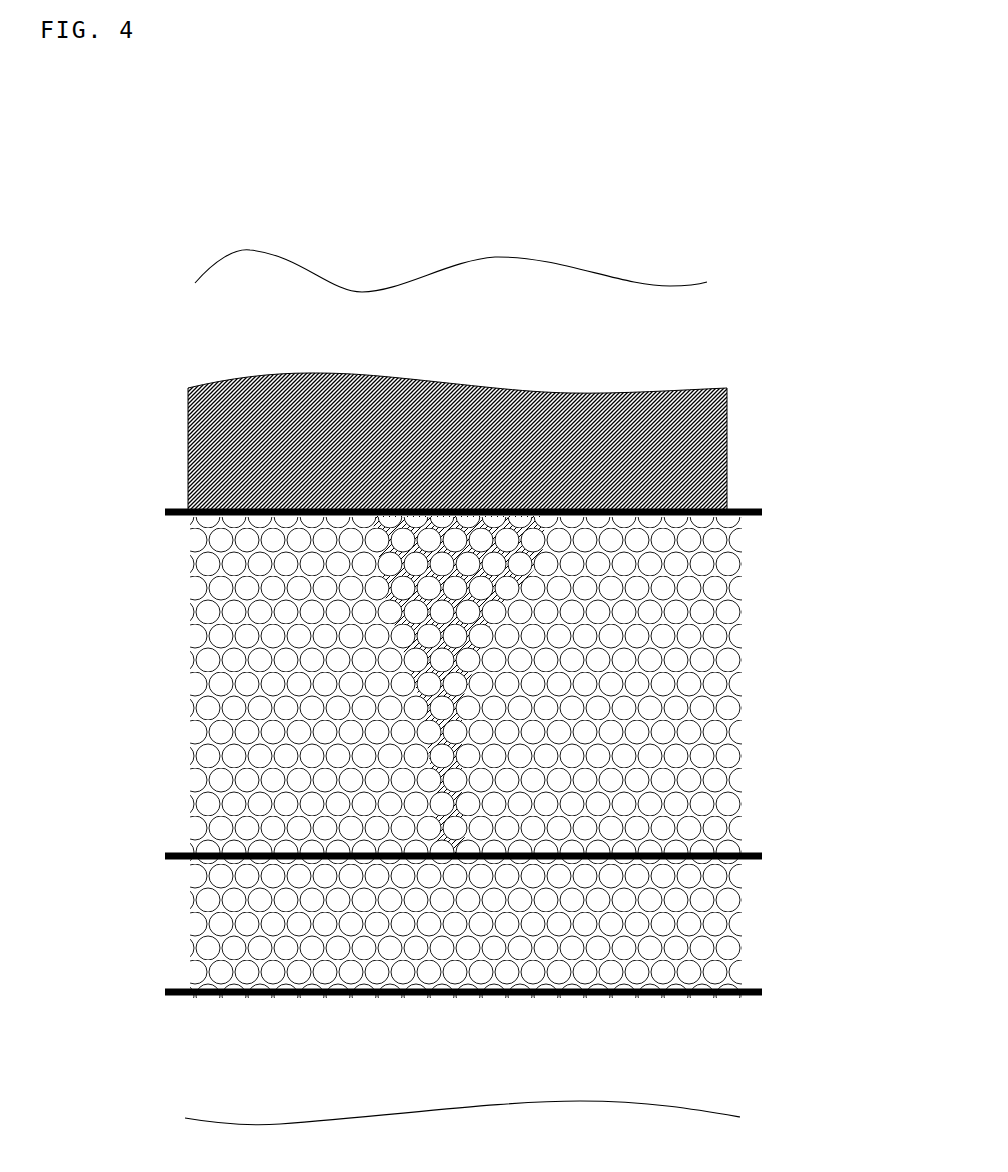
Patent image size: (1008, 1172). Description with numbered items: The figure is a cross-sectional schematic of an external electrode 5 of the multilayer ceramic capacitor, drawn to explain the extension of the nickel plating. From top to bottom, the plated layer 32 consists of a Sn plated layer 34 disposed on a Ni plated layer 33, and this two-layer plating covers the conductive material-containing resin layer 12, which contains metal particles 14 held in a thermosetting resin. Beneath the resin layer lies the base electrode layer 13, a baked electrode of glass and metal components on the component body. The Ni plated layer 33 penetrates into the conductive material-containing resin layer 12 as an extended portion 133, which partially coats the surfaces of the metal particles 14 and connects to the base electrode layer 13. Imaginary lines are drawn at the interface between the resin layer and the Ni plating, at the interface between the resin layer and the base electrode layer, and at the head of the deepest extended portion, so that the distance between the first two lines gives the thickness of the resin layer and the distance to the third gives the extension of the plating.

The external electrode 5 is at (533, 195).
The conductive material-containing resin layer 12 is at (440, 756).
The base electrode layer 13 is at (768, 1013).
The metal particles 14 is at (225, 655).
The plated layer 32 is at (815, 323).
The Ni plated layer 33 is at (737, 392).
The Sn plated layer 34 is at (737, 282).
The extended portion 133 is at (435, 716).